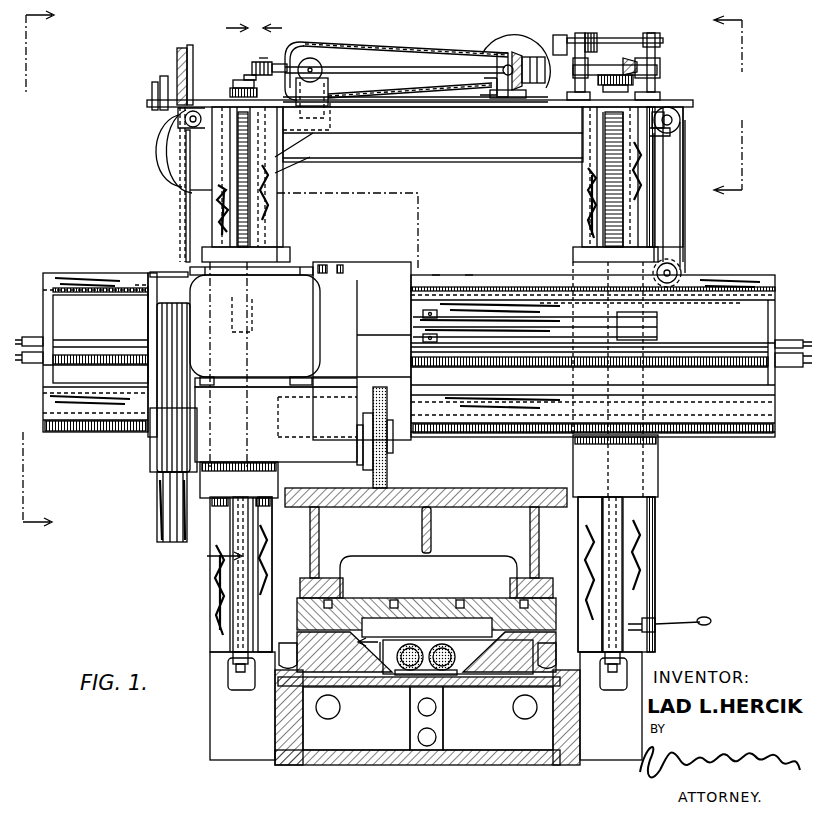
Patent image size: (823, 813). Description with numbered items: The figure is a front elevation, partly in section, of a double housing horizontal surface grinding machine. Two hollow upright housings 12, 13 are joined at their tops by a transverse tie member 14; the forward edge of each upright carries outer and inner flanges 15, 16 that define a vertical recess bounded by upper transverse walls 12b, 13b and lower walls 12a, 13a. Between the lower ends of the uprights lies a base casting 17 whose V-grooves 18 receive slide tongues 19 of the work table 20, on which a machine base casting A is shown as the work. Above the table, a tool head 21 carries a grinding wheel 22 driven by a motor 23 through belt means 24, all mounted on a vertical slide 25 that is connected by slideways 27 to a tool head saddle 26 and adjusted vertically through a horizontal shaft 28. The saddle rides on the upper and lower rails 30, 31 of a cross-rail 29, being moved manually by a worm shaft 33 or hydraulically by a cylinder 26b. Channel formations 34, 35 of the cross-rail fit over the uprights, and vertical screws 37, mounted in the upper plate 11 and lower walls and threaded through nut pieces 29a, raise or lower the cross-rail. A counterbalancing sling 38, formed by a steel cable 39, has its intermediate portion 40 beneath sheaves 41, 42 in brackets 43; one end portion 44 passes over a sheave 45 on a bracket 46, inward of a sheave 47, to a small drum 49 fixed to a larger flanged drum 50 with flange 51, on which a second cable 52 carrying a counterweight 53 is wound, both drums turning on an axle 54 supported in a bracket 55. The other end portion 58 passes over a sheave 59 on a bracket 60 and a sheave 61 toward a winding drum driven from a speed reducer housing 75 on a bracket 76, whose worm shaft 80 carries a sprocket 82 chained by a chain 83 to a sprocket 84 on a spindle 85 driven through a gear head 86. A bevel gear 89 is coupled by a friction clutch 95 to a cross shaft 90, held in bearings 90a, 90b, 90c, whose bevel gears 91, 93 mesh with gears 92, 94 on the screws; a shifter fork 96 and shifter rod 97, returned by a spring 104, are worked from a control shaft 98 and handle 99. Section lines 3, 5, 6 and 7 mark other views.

The upper transverse plate 11 is at (390, 100).
The upright housing or column 12 is at (215, 223).
The lower wall 12a is at (230, 656).
The upper transverse wall 12b is at (244, 62).
The upright housing or column 13 is at (660, 230).
The lower wall 13a is at (628, 658).
The upper transverse wall 13b is at (622, 108).
The transverse tie member 14 is at (455, 148).
The outer way or flange 15 is at (215, 606).
The inner way or flange 16 is at (270, 576).
The base casting 17 is at (280, 766).
The V-grooves or ways 18 is at (342, 686).
The slide tongues 19 is at (318, 648).
The work carrying table 20 is at (428, 596).
The tool head 21 is at (145, 440).
The grinding wheel 22 is at (385, 480).
The motor 23 is at (305, 340).
The belt means 24 is at (160, 365).
The vertical slide or support 25 is at (345, 322).
The tool head saddle 26 is at (390, 262).
The cylinder 26b is at (556, 318).
The slideways 27 is at (338, 262).
The horizontal shaft 28 is at (78, 340).
The cross-rail or transverse rail member 29 is at (55, 270).
The nut piece 29a is at (252, 312).
The upper rail 30 is at (469, 272).
The lower rail 31 is at (80, 412).
The worm shaft 33 is at (95, 362).
The channel-shaped formation 34 is at (290, 248).
The channel-shaped formation 35 is at (573, 258).
The worm shaft or screw 37 is at (262, 210).
The sling or suspension means 38 is at (690, 196).
The flexible steel cable 39 is at (682, 206).
The intermediate portion of cable 40 is at (436, 272).
The idle supporting and guide sheave 41 is at (200, 252).
The idle supporting and guide sheave 42 is at (678, 255).
The brackets 43 is at (690, 268).
The end portion of cable 44 is at (178, 207).
The sheave 45 is at (176, 122).
The bracket 46 is at (185, 165).
The sheave 47 is at (147, 103).
The small grooved drum 49 is at (232, 88).
The large drum 50 is at (188, 45).
The flange 51 is at (178, 47).
The second cable 52 is at (175, 190).
The counterweight 53 is at (160, 515).
The shaft or axle 54 is at (160, 82).
The bracket 55 is at (155, 153).
The opposite end portion of cable 58 is at (688, 162).
The sheave 59 is at (690, 120).
The bracket 60 is at (660, 135).
The sheave 61 is at (655, 104).
The speed reducer housing 75 is at (322, 118).
The bracket 76 is at (300, 142).
The shaft 80 is at (322, 60).
The sprocket wheel 82 is at (338, 55).
The endless sprocket chain 83 is at (400, 45).
The sprocket wheel 84 is at (458, 52).
The spindle 85 is at (505, 52).
The gear head 86 is at (518, 52).
The bevel gear 89 is at (505, 100).
The cross shaft 90 is at (398, 68).
The bearing 90a is at (292, 136).
The bearing 90b is at (490, 95).
The bearing 90c is at (650, 85).
The bevel gear 91 is at (645, 68).
The bevel gear 92 is at (588, 98).
The bevel gear 93 is at (262, 60).
The bevel gear 94 is at (250, 75).
The friction clutch 95 is at (522, 96).
The shifter fork 96 is at (560, 35).
The shifter rod 97 is at (640, 38).
The vertical control shaft 98 is at (656, 165).
The control handle 99 is at (700, 620).
The spring 104 is at (593, 35).
The machine base casting A is at (482, 492).
The section line 3 is at (321, 347).
The section line 5 is at (732, 111).
The section line 6 is at (38, 276).
The section line 7 is at (219, 293).